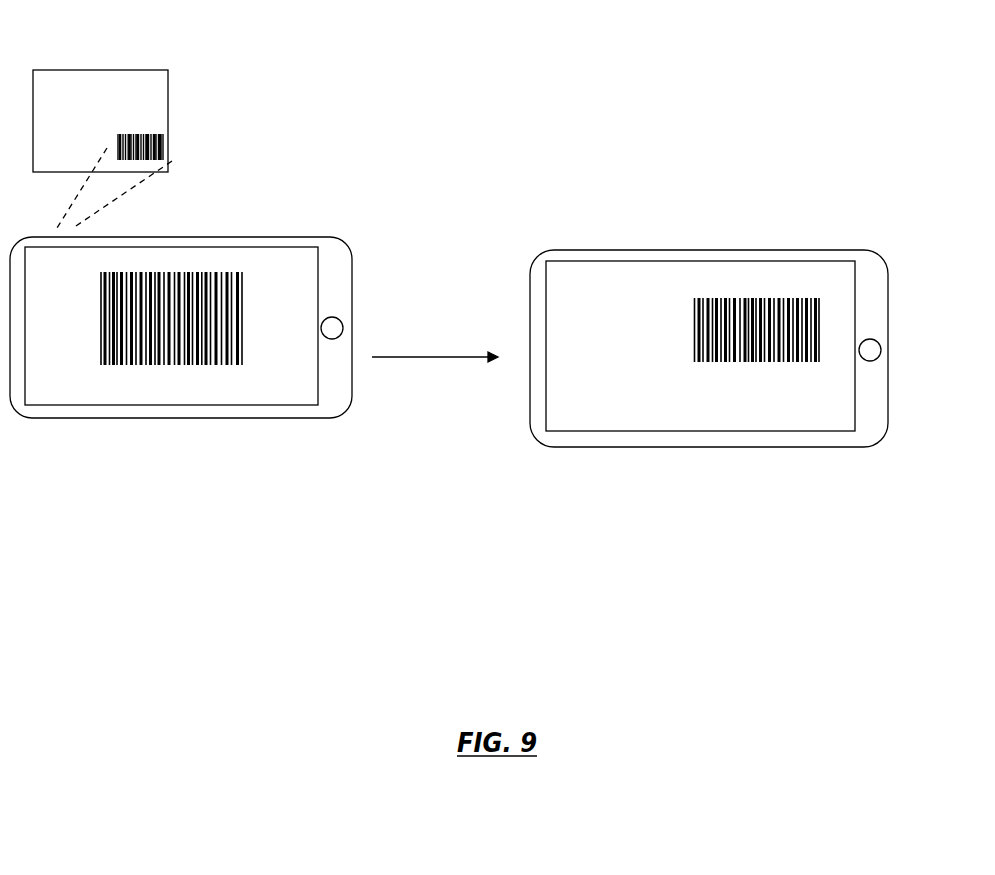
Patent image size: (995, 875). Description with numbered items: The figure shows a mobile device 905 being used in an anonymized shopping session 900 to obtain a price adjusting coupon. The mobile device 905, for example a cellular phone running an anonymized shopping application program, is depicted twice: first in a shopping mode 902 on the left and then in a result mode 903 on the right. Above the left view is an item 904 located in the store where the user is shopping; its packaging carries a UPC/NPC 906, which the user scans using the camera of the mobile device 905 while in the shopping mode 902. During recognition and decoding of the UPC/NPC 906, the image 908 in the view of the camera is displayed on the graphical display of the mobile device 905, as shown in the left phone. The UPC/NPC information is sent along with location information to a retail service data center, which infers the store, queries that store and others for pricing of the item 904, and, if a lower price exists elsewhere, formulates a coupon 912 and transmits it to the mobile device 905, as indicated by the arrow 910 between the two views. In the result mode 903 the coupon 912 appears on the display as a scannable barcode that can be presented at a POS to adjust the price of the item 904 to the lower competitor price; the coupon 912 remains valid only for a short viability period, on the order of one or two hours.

The anonymized shopping session 900 is at (511, 32).
The shopping mode 902 is at (185, 493).
The result mode 903 is at (755, 496).
The item 904 is at (80, 69).
The mobile device 905 is at (262, 236).
The UPC/NPC 906 is at (153, 135).
The image 908 is at (170, 365).
The arrow 910 is at (465, 356).
The coupon 912 is at (762, 297).